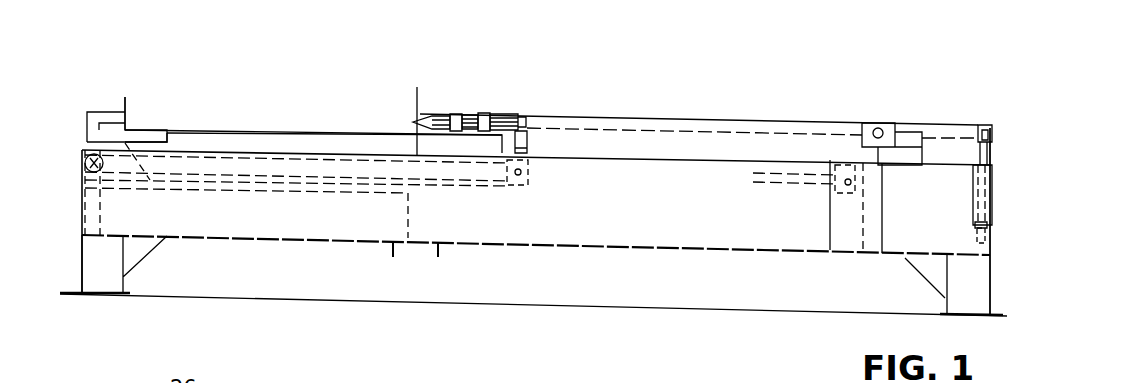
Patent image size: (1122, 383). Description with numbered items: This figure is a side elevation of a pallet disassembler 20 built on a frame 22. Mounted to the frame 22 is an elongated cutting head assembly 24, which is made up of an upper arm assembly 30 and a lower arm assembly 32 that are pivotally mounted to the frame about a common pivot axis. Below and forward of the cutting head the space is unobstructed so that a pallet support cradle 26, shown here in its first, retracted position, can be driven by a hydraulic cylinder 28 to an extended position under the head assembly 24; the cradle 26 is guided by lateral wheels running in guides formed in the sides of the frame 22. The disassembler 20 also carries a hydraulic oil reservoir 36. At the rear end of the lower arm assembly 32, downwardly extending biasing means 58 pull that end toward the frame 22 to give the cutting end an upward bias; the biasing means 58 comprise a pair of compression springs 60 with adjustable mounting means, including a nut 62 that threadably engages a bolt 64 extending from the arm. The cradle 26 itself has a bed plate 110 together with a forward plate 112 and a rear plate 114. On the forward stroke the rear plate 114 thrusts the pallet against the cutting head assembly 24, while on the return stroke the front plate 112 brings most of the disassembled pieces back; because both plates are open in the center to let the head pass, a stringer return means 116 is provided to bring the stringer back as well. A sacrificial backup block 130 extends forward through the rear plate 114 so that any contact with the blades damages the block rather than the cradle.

The pallet disassembler 20 is at (638, 88).
The frame 22 is at (550, 243).
The elongated cutting head assembly 24 is at (717, 120).
The pallet support cradle 26 is at (204, 128).
The hydraulic cylinder 28 is at (433, 192).
The upper arm assembly 30 is at (503, 113).
The lower arm assembly 32 is at (630, 135).
The hydraulic oil reservoir 36 is at (212, 222).
The biasing means 58 is at (997, 197).
The compression springs 60 is at (990, 215).
The nut 62 is at (985, 230).
The bolt 64 is at (988, 160).
The bed plate 110 is at (280, 130).
The forward plate 112 is at (418, 92).
The rear plate 114 is at (125, 97).
The stringer return means 116 is at (528, 137).
The backup block 130 is at (102, 112).